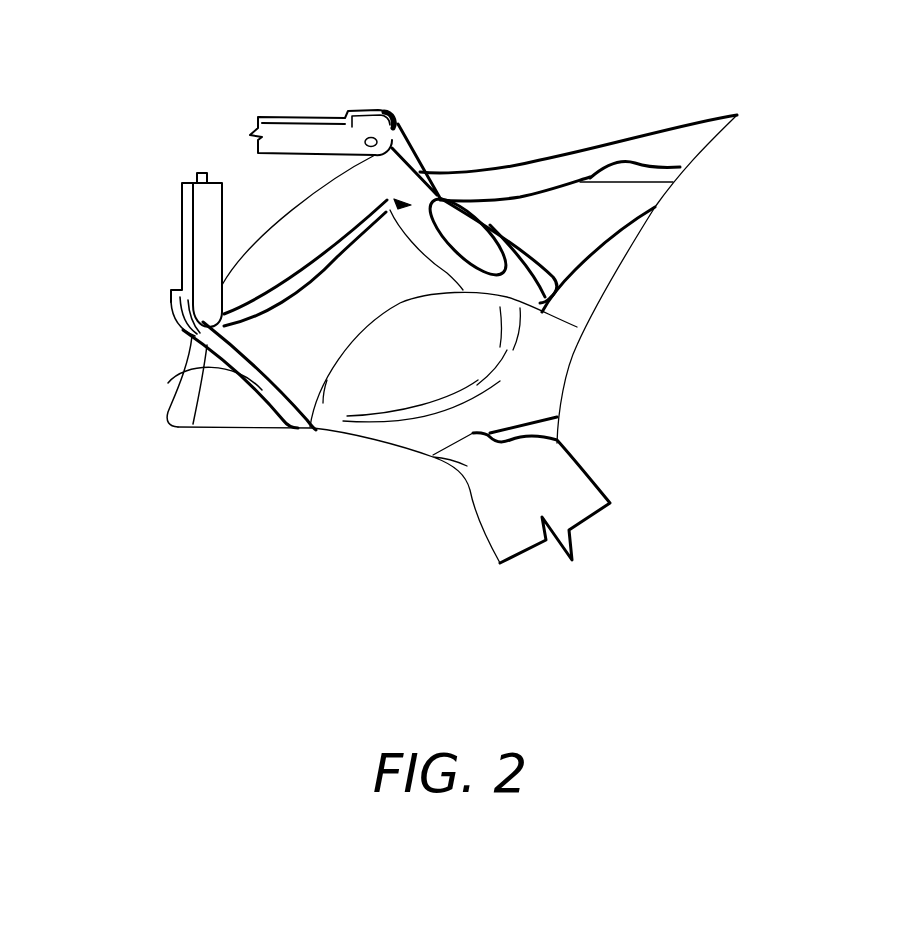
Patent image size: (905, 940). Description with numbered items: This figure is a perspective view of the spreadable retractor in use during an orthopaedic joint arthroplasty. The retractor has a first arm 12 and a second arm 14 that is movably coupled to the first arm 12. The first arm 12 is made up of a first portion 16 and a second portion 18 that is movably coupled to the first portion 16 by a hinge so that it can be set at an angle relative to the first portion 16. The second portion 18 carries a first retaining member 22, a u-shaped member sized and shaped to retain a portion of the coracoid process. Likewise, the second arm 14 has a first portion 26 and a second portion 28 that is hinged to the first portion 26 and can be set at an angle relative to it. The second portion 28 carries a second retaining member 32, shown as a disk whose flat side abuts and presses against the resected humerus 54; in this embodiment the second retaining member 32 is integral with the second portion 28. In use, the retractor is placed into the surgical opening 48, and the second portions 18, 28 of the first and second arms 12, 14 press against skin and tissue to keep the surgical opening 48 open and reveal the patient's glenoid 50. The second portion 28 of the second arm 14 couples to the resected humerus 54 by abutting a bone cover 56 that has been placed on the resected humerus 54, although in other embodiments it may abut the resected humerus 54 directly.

The first arm 12 is at (128, 280).
The second arm 14 is at (394, 90).
The first portion 16 is at (190, 218).
The second portion 18 is at (197, 364).
The first retaining member 22 is at (277, 427).
The first portion 26 is at (308, 118).
The second portion 28 is at (441, 125).
The second retaining member 32 is at (473, 200).
The surgical opening 48 is at (600, 256).
The glenoid 50 is at (520, 340).
The resected humerus 54 is at (584, 217).
The bone cover 56 is at (521, 196).